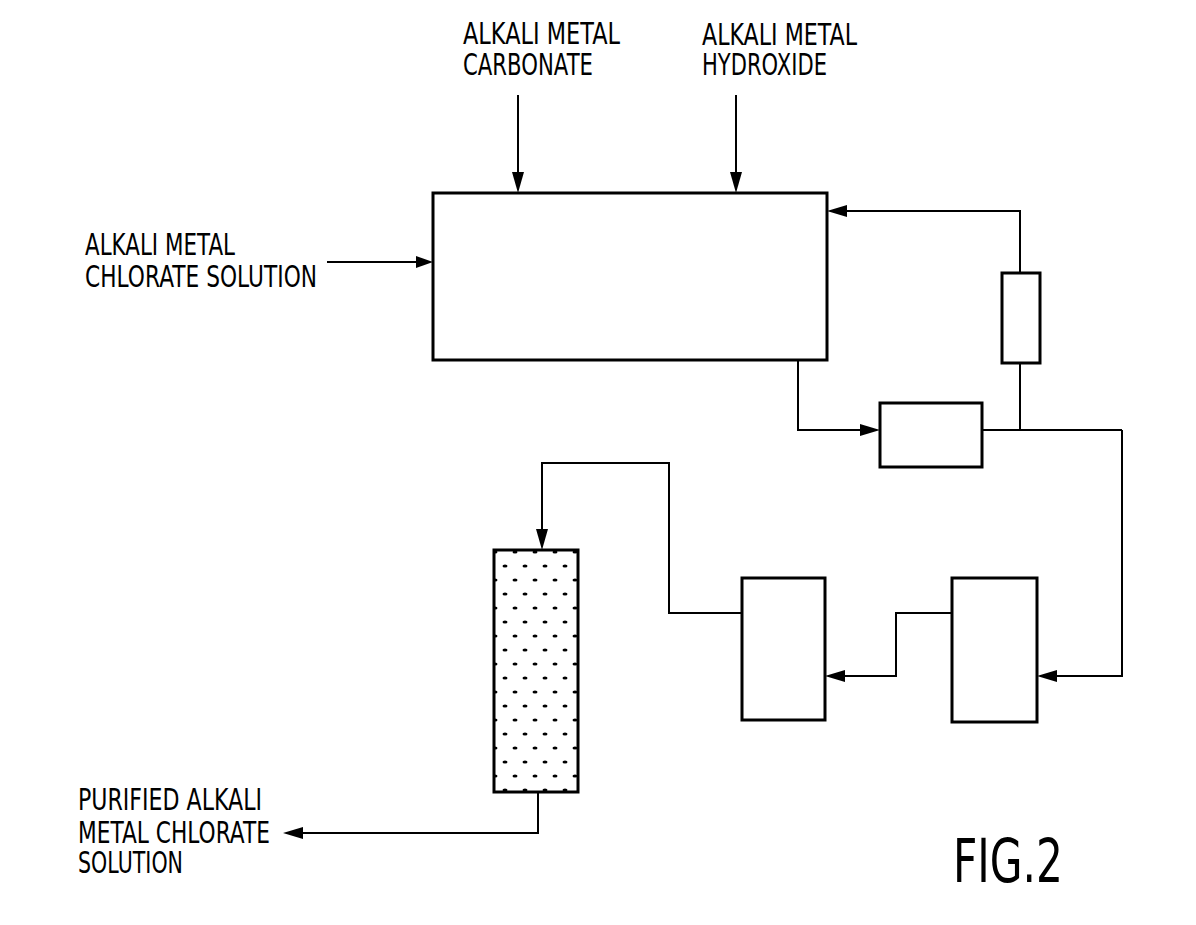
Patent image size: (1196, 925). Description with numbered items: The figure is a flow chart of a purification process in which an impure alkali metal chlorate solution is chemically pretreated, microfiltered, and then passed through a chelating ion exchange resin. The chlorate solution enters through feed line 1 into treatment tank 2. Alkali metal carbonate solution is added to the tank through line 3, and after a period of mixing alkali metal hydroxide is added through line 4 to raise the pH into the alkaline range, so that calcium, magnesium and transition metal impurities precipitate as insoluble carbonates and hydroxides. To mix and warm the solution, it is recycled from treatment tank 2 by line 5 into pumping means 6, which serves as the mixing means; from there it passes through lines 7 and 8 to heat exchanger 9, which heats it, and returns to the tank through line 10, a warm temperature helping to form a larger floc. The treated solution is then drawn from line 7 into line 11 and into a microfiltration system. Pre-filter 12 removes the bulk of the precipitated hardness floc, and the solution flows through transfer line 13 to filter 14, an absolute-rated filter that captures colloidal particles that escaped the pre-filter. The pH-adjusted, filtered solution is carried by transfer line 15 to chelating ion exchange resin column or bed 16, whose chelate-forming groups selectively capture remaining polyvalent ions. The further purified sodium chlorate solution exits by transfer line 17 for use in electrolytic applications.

The feed line 1 is at (371, 266).
The treatment tank 2 is at (497, 362).
The line 3 is at (518, 130).
The line 4 is at (736, 127).
The line 5 is at (798, 408).
The pumping means 6 is at (930, 467).
The line 7 is at (1010, 432).
The line 8 is at (1020, 402).
The heat exchanger 9 is at (1040, 310).
The line 10 is at (940, 211).
The line 11 is at (1122, 560).
The pre-filter 12 is at (1010, 723).
The transfer line 13 is at (882, 678).
The filter 14 is at (778, 722).
The transfer line 15 is at (669, 555).
The chelating ion exchange resin column 16 is at (494, 673).
The transfer line 17 is at (400, 836).